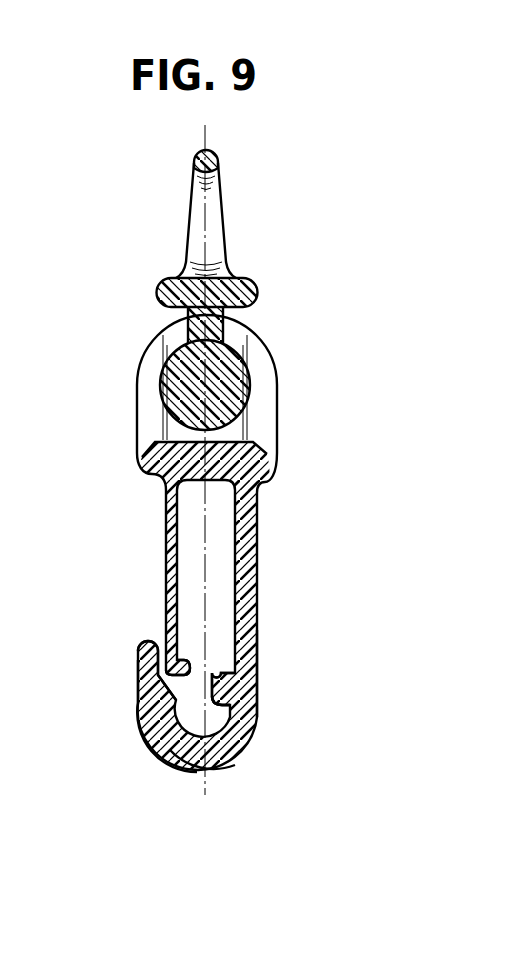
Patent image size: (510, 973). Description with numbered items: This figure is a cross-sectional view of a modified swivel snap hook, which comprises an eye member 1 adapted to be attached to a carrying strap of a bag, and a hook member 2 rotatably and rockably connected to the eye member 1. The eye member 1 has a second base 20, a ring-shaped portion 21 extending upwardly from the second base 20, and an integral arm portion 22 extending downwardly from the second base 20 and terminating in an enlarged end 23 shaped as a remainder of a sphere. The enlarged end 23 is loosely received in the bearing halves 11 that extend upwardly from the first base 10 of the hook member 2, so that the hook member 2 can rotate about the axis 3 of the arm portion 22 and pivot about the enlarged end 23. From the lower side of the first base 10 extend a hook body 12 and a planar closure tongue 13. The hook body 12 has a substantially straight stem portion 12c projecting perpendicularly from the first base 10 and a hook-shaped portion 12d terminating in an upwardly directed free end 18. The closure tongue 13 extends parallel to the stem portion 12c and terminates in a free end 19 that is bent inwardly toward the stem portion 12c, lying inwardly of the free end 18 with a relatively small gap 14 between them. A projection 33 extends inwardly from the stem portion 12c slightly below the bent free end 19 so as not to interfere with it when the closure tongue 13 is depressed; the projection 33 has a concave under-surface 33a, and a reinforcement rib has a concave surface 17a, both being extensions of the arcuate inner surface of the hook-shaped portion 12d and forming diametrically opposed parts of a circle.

The eye member 1 is at (233, 288).
The hook member 2 is at (205, 478).
The axis 3 is at (205, 613).
The first base 10 is at (160, 463).
The bearing halves 11 is at (153, 343).
The hook body 12 is at (257, 553).
The stem portion 12c is at (258, 657).
The hook-shaped portion 12d is at (212, 762).
The closure tongue 13 is at (170, 545).
The gap 14 is at (160, 650).
The concave surface 17a is at (151, 746).
The free end 18 is at (140, 650).
The free end 19 is at (177, 675).
The second base 20 is at (247, 291).
The ring-shaped portion 21 is at (197, 203).
The arm portion 22 is at (247, 323).
The enlarged end 23 is at (238, 397).
The projection 33 is at (217, 679).
The concave under-surface 33a is at (230, 704).